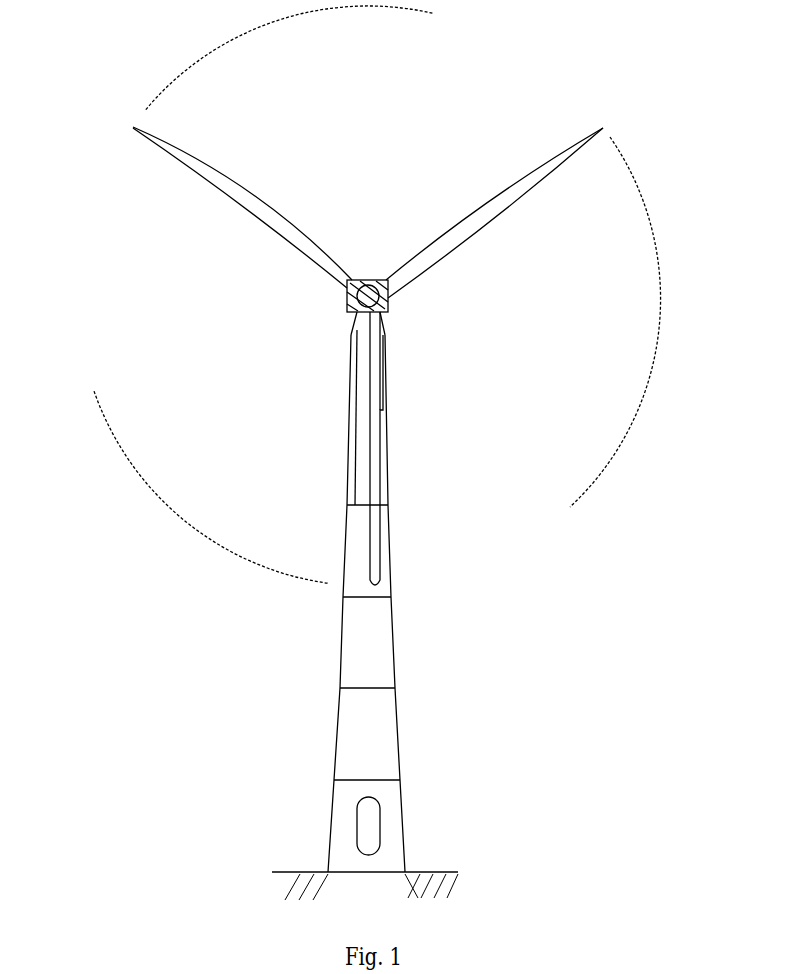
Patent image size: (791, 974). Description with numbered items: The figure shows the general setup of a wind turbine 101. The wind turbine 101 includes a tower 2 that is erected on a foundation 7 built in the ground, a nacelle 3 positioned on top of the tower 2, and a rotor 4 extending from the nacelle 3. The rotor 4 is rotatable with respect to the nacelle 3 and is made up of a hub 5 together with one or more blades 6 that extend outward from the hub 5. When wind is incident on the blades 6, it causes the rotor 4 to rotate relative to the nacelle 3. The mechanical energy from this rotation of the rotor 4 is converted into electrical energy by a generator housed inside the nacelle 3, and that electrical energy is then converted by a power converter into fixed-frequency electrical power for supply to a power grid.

The wind turbine 101 is at (155, 670).
The tower 2 is at (383, 745).
The nacelle 3 is at (387, 307).
The rotor 4 is at (602, 468).
The hub 5 is at (367, 298).
The blades 6 is at (468, 223).
The foundation 7 is at (332, 885).